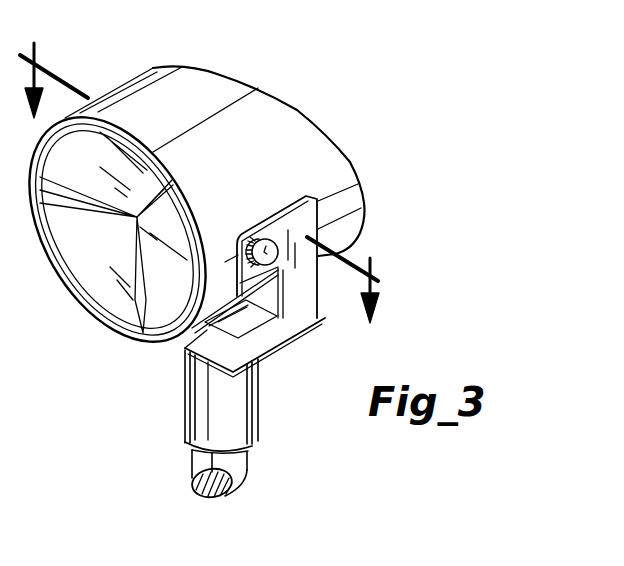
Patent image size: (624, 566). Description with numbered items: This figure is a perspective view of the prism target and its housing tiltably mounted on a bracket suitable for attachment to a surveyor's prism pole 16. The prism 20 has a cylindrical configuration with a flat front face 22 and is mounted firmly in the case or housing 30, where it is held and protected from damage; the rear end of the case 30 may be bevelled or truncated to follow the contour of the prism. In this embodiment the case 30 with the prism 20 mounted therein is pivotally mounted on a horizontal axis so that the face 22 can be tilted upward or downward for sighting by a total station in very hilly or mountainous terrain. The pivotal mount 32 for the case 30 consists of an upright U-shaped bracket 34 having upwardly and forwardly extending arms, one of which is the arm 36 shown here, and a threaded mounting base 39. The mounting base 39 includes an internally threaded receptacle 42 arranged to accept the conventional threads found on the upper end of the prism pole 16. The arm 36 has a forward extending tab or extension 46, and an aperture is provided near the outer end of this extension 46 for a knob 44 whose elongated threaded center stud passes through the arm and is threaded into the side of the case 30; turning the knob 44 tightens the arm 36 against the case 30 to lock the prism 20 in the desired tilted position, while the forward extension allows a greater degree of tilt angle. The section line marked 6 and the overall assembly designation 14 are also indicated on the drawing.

The lamp assembly 14 is at (296, 79).
The case or housing 30 is at (300, 125).
The prism 20 is at (100, 292).
The flat front face 22 is at (72, 237).
The section line 6- 6 is at (211, 174).
The upright U-shaped bracket 34 is at (300, 214).
The forward extending tab or extension 46 is at (270, 238).
The pivotal mount 32 is at (300, 302).
The arm 36 is at (302, 321).
The knob 44 is at (186, 344).
The threaded mounting base 39 is at (200, 422).
The internally threaded receptacle 42 is at (258, 446).
The surveyor's prism pole 16 is at (240, 465).